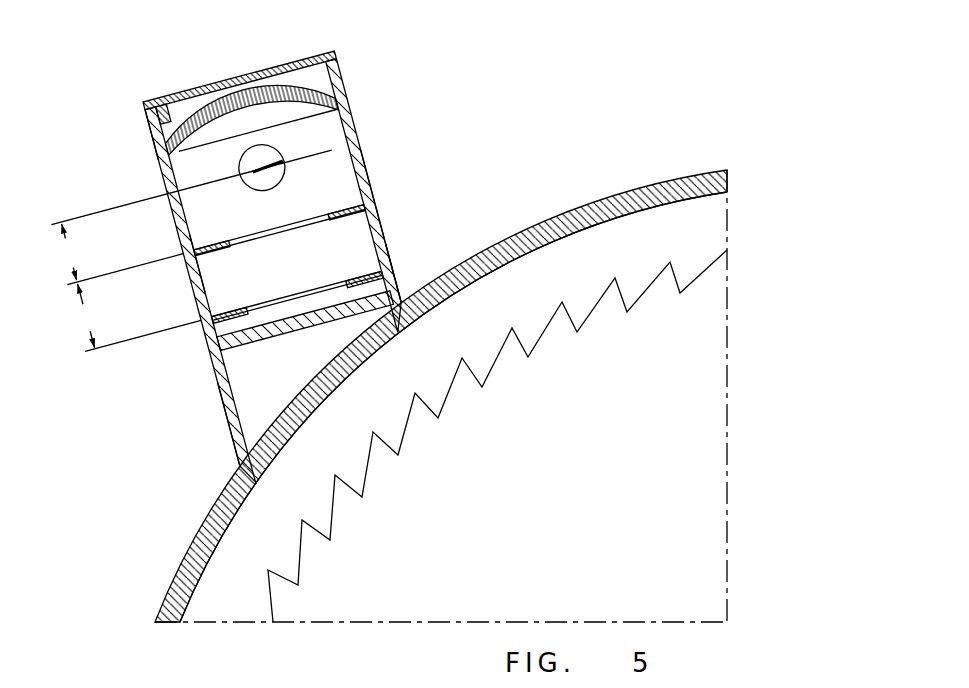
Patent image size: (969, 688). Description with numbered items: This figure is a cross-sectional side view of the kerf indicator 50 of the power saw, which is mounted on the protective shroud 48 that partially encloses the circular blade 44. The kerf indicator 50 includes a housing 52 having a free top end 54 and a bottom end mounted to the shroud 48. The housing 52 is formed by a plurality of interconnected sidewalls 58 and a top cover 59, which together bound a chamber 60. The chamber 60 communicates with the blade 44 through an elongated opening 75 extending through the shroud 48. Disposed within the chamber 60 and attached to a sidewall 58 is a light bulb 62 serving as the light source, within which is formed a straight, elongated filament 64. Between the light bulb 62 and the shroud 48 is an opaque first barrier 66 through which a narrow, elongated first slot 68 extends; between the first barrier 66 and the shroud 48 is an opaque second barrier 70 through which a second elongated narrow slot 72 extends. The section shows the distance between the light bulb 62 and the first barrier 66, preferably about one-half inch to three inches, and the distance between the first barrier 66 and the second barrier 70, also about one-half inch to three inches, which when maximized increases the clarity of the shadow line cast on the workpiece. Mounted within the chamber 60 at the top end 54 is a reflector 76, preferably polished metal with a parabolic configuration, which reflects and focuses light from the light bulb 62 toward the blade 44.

The circular blade 44 is at (686, 453).
The protective shroud 48 is at (676, 176).
The kerf indicator 50 is at (492, 104).
The housing 52 is at (372, 232).
The free top end 54 is at (139, 117).
The sidewalls 58 is at (213, 402).
The top cover 59 is at (183, 87).
The chamber 60 is at (333, 160).
The light bulb 62 is at (263, 155).
The filament 64 is at (313, 187).
The first barrier 66 is at (199, 263).
The first slot 68 is at (283, 233).
The second barrier 70 is at (385, 270).
The second slot 72 is at (290, 298).
The elongated opening 75 is at (316, 398).
The reflector 76 is at (320, 82).